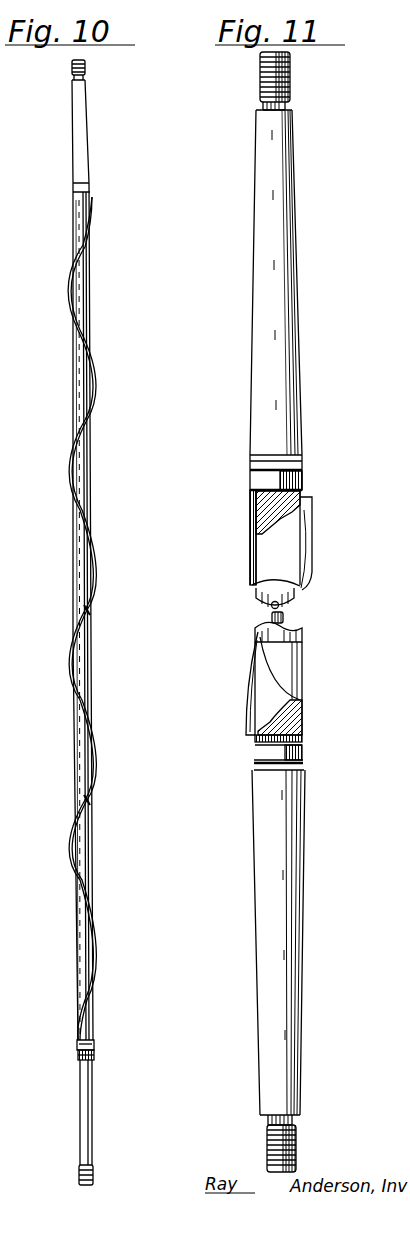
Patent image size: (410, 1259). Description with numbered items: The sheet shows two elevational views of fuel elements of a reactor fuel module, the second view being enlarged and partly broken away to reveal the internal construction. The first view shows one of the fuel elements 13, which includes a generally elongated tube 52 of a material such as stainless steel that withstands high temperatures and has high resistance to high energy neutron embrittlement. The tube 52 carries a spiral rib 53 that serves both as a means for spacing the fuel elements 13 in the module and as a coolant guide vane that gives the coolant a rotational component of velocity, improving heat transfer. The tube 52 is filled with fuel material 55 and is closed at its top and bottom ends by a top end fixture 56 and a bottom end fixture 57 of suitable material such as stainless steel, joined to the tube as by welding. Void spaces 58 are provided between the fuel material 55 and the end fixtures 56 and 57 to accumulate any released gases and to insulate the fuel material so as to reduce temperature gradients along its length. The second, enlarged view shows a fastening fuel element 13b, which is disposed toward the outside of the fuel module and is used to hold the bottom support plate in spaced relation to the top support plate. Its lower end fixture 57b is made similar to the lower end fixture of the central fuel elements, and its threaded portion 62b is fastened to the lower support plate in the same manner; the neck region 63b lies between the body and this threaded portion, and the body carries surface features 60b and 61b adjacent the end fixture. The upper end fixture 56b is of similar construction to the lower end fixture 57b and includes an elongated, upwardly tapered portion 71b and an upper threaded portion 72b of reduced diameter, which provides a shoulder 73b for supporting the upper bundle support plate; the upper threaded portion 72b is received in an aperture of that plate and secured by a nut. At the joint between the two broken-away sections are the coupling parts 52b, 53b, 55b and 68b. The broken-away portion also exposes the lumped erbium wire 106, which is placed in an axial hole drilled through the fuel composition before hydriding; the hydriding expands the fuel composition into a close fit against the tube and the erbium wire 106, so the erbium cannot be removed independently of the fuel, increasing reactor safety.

In FIG. 10, the fuel element 13 is at (86, 530).
In FIG. 10, the tube 52 is at (91, 722).
In FIG. 10, the spiral rib 53 is at (90, 613).
In FIG. 10, the fuel material 55 is at (92, 1046).
In FIG. 10, the top end fixture 56 is at (86, 142).
In FIG. 10, the bottom end fixture 57 is at (93, 1092).
In FIG. 10, the void space 58 is at (94, 1054).
In FIG. 11, the fastening fuel element 13b is at (250, 437).
In FIG. 11, the cup member 52b is at (300, 710).
In FIG. 11, the socket member 53b is at (306, 548).
In FIG. 11, the socket cap 55b is at (300, 630).
In FIG. 11, the upper end fixture 56b is at (300, 362).
In FIG. 11, the lower end fixture 57b is at (296, 912).
In FIG. 11, the band 60b is at (303, 753).
In FIG. 11, the rod shading line 61b is at (293, 990).
In FIG. 11, the threaded portion 62b is at (294, 1120).
In FIG. 11, the lower neck 63b is at (268, 1119).
In FIG. 11, the coupling band 68b is at (288, 463).
In FIG. 11, the upwardly tapered portion 71b is at (296, 208).
In FIG. 11, the upper threaded portion 72b is at (290, 82).
In FIG. 11, the shoulder 73b is at (263, 108).
In FIG. 11, the erbium wire 106 is at (272, 608).